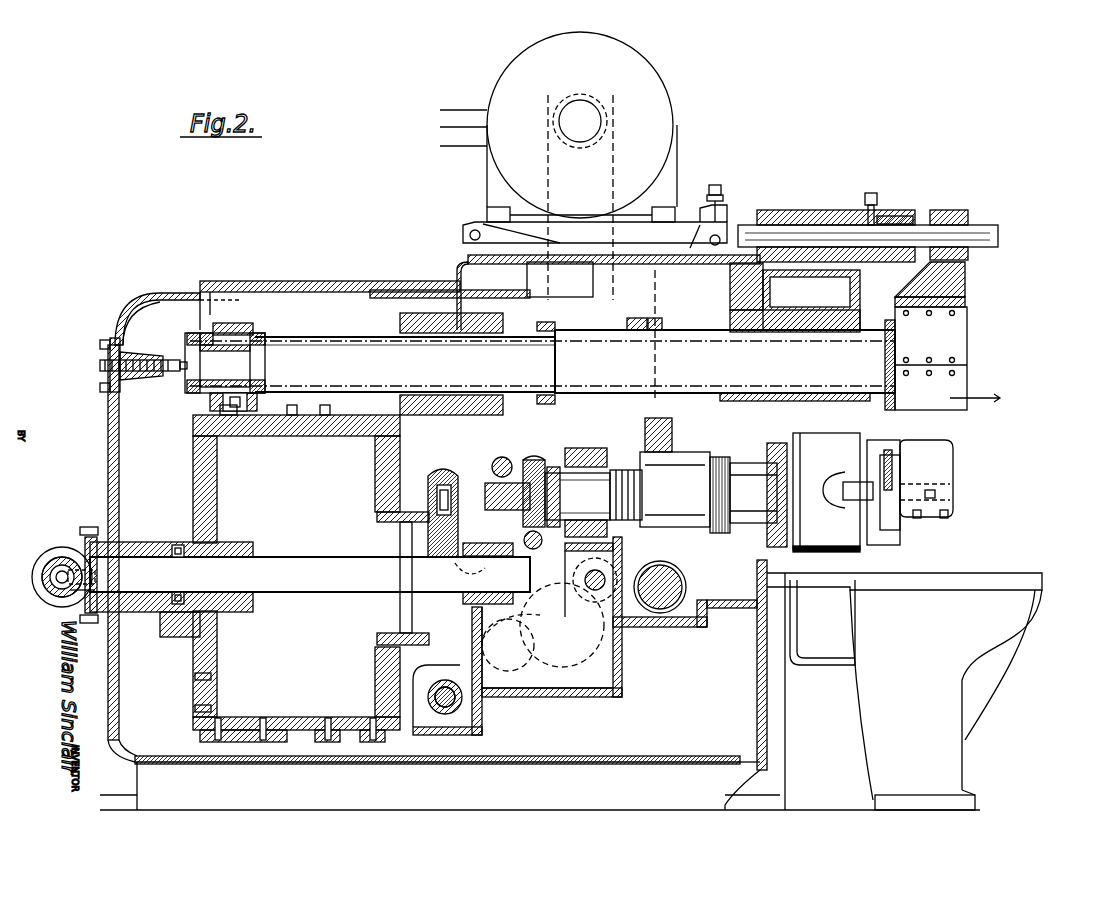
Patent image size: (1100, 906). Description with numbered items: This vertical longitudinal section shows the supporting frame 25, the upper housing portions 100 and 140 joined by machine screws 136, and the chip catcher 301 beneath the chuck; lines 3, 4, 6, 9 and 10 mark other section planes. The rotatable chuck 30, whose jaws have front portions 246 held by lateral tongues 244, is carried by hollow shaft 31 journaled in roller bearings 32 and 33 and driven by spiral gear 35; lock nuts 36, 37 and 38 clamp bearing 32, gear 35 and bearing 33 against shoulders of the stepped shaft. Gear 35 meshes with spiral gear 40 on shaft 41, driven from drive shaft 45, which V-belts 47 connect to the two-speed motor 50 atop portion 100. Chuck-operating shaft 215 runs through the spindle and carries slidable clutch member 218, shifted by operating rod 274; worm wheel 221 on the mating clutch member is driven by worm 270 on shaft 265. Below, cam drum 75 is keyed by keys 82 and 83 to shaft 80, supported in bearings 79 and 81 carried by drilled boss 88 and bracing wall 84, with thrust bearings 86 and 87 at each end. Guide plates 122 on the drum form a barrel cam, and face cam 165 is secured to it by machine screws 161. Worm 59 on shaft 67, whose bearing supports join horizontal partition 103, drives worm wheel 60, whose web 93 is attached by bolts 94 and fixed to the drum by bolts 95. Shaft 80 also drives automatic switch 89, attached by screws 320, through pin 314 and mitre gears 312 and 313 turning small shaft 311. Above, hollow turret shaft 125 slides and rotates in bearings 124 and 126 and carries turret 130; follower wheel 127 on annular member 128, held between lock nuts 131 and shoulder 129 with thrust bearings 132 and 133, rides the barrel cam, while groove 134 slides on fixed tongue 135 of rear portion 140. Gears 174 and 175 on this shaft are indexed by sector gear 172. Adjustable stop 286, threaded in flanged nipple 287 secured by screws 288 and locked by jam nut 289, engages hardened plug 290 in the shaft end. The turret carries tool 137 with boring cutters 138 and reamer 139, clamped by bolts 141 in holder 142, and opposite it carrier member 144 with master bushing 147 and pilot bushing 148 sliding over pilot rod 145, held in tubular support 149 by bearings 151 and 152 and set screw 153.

The motor 50 is at (648, 106).
The V-belts 47 is at (600, 152).
The upper portion of the housing 100 is at (470, 224).
The section line 10 is at (418, 280).
The section line 9 is at (617, 250).
The section line 4 is at (673, 250).
The section line 3 is at (835, 230).
The section line 6 is at (183, 690).
The machine screws 136 is at (455, 262).
The rear portion of the upper part of the housing 140 is at (160, 297).
The fixed tongue 135 is at (362, 275).
The thrust bearing 132 is at (230, 318).
The annular member 128 is at (262, 325).
The lock nuts 131 is at (200, 335).
The groove 134 is at (225, 363).
The adjustable stop 286 is at (178, 362).
The jam nut 289 is at (110, 355).
The screws 288 is at (104, 340).
The flanged nipple 287 is at (100, 387).
The hardened plug 290 is at (200, 380).
The follower wheel 127 is at (637, 318).
The shoulder 129 is at (270, 363).
The thrust bearing 133 is at (280, 381).
The turret shaft 125 is at (723, 330).
The bearing 126 is at (428, 313).
The gear 174 is at (556, 325).
The gear 175 is at (520, 283).
The sector gear 172 is at (652, 318).
The bearing 124 is at (805, 298).
The bearing 152 is at (772, 212).
The pilot rod 145 is at (985, 232).
The set screw 153 is at (873, 193).
The tubular drilled support 149 is at (895, 216).
The bearing 151 is at (920, 212).
The master bushing 147 is at (968, 256).
The carrier member 144 is at (965, 284).
The pilot bushing 148 is at (920, 300).
The turret 130 is at (945, 350).
The tool holder 142 is at (955, 460).
The reamer 139 is at (935, 494).
The clamping bolts 141 is at (950, 515).
The tool 137 is at (895, 525).
The boring cutters 138 is at (878, 445).
The front portion of chuck jaw 246 is at (873, 485).
The lateral tongues 244 is at (826, 498).
The rotatable chuck 30 is at (860, 545).
The roller bearing 32 is at (840, 549).
The shaft 31 is at (765, 492).
The spiral gear 35 is at (672, 435).
The lock nuts 37 is at (625, 468).
The lock nuts 36 is at (718, 533).
The roller bearing 33 is at (585, 448).
The operating rod 274 is at (577, 496).
The lock nuts 38 is at (560, 445).
The worm wheel 221 is at (533, 458).
The shaft 215 is at (500, 457).
The clutch member 218 is at (505, 510).
The shaft 265 is at (540, 548).
The worm 270 is at (538, 549).
The cam drum 75 is at (382, 416).
The face cam 165 is at (193, 462).
The shaft 80 is at (312, 557).
The key 82 is at (200, 563).
The bearing 79 is at (142, 542).
The thrust bearing 86 is at (180, 545).
The drilled boss 88 is at (150, 612).
The automatic switch 89 is at (85, 540).
The screws 320 is at (92, 563).
The mitre gear 313 is at (45, 555).
The small shaft 311 is at (50, 595).
The pin 314 is at (95, 574).
The mitre gear 312 is at (95, 586).
The machine screws 161 is at (211, 708).
The guide plates 122 is at (232, 742).
The bolts 95 is at (418, 512).
The supporting web 93 is at (437, 472).
The bolts 94 is at (450, 485).
The thrust bearing 87 is at (468, 543).
The key 83 is at (468, 573).
The bearing 81 is at (488, 584).
The worm 59 is at (482, 735).
The worm wheel 60 is at (462, 700).
The shaft 67 is at (452, 705).
The horizontal partition 103 is at (445, 735).
The bracing supporting wall 84 is at (520, 656).
The drive shaft 45 is at (622, 650).
The spiral gear 40 is at (700, 620).
The shaft 41 is at (665, 600).
The supporting frame 25 is at (767, 715).
The chip catcher 301 is at (962, 738).